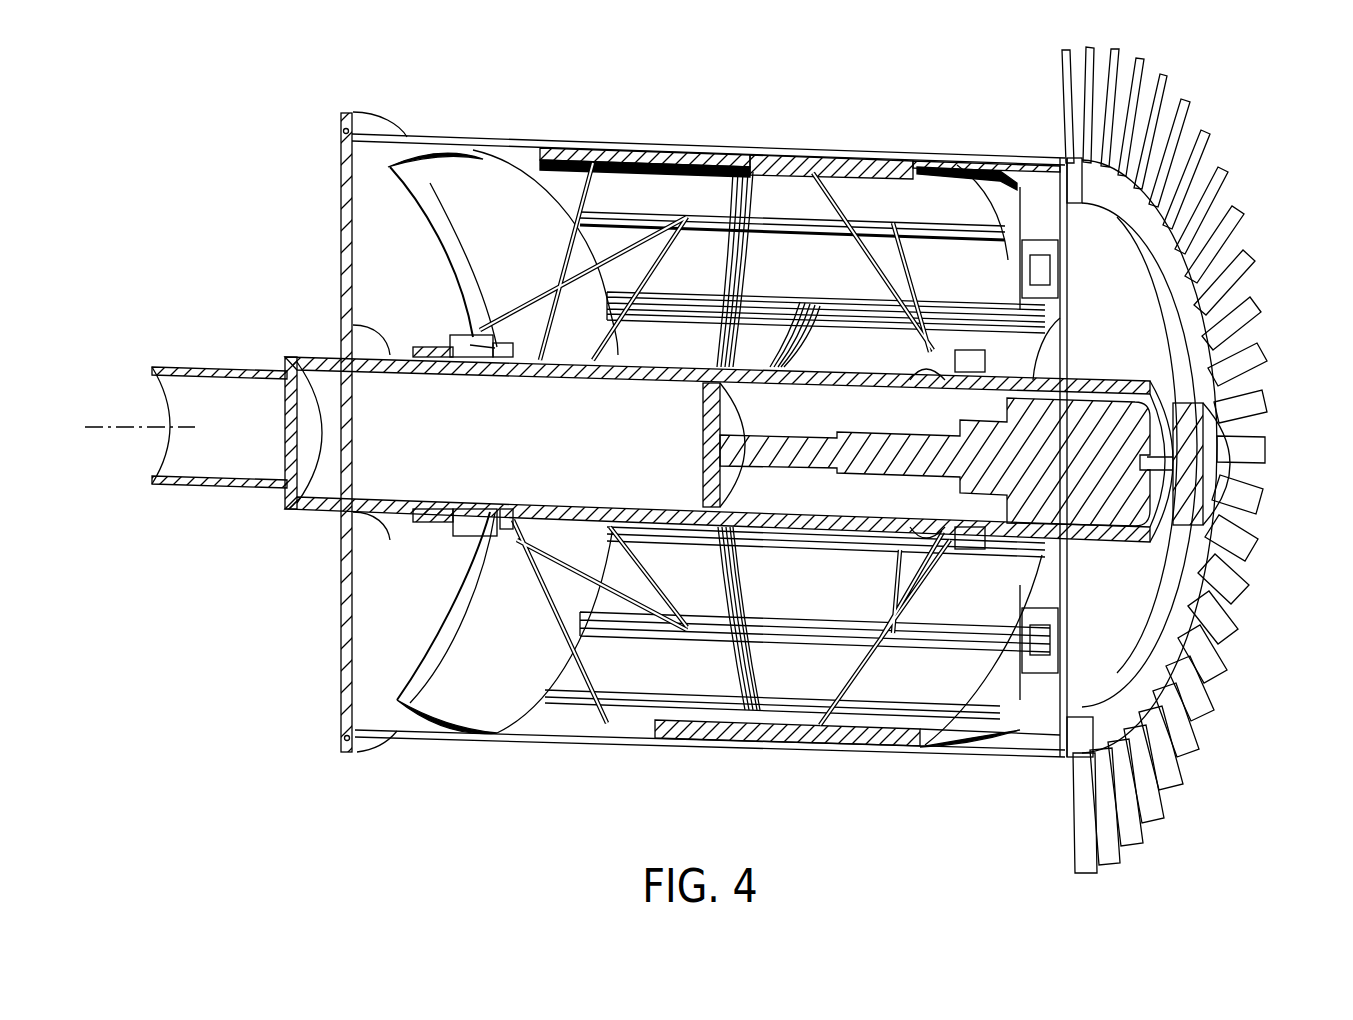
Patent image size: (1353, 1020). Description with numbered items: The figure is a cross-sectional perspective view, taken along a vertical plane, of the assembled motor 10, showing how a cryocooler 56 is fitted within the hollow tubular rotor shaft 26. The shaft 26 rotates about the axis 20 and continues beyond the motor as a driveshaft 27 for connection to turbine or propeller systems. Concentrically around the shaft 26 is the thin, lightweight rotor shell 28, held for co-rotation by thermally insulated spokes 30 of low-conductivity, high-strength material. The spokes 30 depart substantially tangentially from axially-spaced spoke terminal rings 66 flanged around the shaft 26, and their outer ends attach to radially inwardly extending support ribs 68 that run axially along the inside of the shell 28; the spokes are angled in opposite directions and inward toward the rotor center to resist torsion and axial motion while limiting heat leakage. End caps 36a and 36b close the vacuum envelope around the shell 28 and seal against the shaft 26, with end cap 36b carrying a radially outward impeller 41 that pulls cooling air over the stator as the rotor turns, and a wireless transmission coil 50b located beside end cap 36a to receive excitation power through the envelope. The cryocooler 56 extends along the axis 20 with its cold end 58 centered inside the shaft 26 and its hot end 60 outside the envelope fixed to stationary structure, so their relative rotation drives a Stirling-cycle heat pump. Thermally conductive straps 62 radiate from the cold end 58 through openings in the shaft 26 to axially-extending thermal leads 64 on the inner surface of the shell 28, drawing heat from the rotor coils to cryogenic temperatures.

The motor 10 is at (298, 95).
The axis 20 is at (103, 430).
The tubular rotor shaft 26 is at (312, 505).
The driveshaft 27 is at (218, 488).
The rotor shell 28 is at (485, 160).
The thermally insulated spokes 30 is at (635, 603).
The end cap 36a is at (1125, 340).
The end cap 36b is at (367, 257).
The impeller 41 is at (1201, 133).
The wireless transmission coil 50b is at (1049, 611).
The cryocooler 56 is at (1069, 475).
The cold end 58 is at (703, 446).
The hot end 60 is at (1217, 448).
The thermally conductive straps 62 is at (737, 186).
The thermal leads 64 is at (925, 160).
The spoke terminal ring 66 is at (466, 522).
The support ribs 68 is at (640, 151).